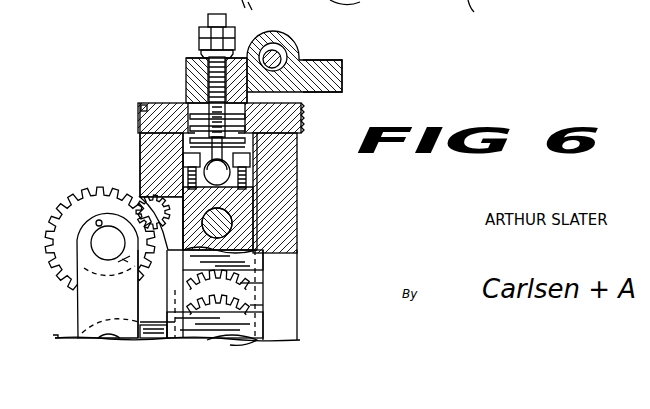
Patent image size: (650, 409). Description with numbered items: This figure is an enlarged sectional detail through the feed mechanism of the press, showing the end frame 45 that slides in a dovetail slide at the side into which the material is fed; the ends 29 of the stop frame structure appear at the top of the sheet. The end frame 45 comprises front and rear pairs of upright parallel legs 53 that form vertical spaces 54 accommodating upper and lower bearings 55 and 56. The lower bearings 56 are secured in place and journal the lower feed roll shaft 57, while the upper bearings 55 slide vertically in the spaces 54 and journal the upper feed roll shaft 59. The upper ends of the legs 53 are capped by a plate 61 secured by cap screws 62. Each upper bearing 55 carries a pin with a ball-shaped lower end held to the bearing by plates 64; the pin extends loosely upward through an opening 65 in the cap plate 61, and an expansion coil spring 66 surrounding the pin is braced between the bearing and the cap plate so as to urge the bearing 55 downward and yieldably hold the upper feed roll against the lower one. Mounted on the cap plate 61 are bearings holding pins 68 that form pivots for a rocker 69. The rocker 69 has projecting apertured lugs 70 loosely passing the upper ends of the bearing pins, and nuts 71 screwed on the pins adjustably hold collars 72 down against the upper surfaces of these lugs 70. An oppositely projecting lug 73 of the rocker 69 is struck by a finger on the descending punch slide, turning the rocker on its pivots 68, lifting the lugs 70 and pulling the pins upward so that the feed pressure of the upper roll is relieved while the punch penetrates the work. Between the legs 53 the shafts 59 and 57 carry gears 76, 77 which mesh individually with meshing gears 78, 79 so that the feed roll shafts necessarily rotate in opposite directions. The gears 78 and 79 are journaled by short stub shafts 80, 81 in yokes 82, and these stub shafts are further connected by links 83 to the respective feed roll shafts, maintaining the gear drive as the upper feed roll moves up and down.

The frame end 29 is at (481, 14).
The end frame 45 is at (306, 289).
The legs 53 is at (138, 153).
The vertical spaces 54 is at (245, 292).
The upper bearings 55 is at (253, 200).
The lower bearings 56 is at (262, 330).
The lower feed roll shaft 57 is at (245, 346).
The upper feed roll shaft 59 is at (253, 228).
The cap plate 61 is at (140, 115).
The cap screws 62 is at (148, 100).
The plates 64 is at (255, 170).
The openings 65 is at (186, 100).
The expansion coil springs 66 is at (300, 136).
The pins 68 is at (293, 50).
The rocker 69 is at (282, 36).
The apertured lugs 70 is at (188, 59).
The nuts 71 is at (200, 38).
The collars 72 is at (202, 52).
The lug 73 is at (343, 75).
The gear 76 is at (240, 283).
The gear 77 is at (250, 305).
The gear 78 is at (70, 200).
The gear 79 is at (54, 334).
The stub shaft 80 is at (100, 237).
The stub shaft 81 is at (118, 323).
The yokes 82 is at (78, 293).
The links 83 is at (132, 190).